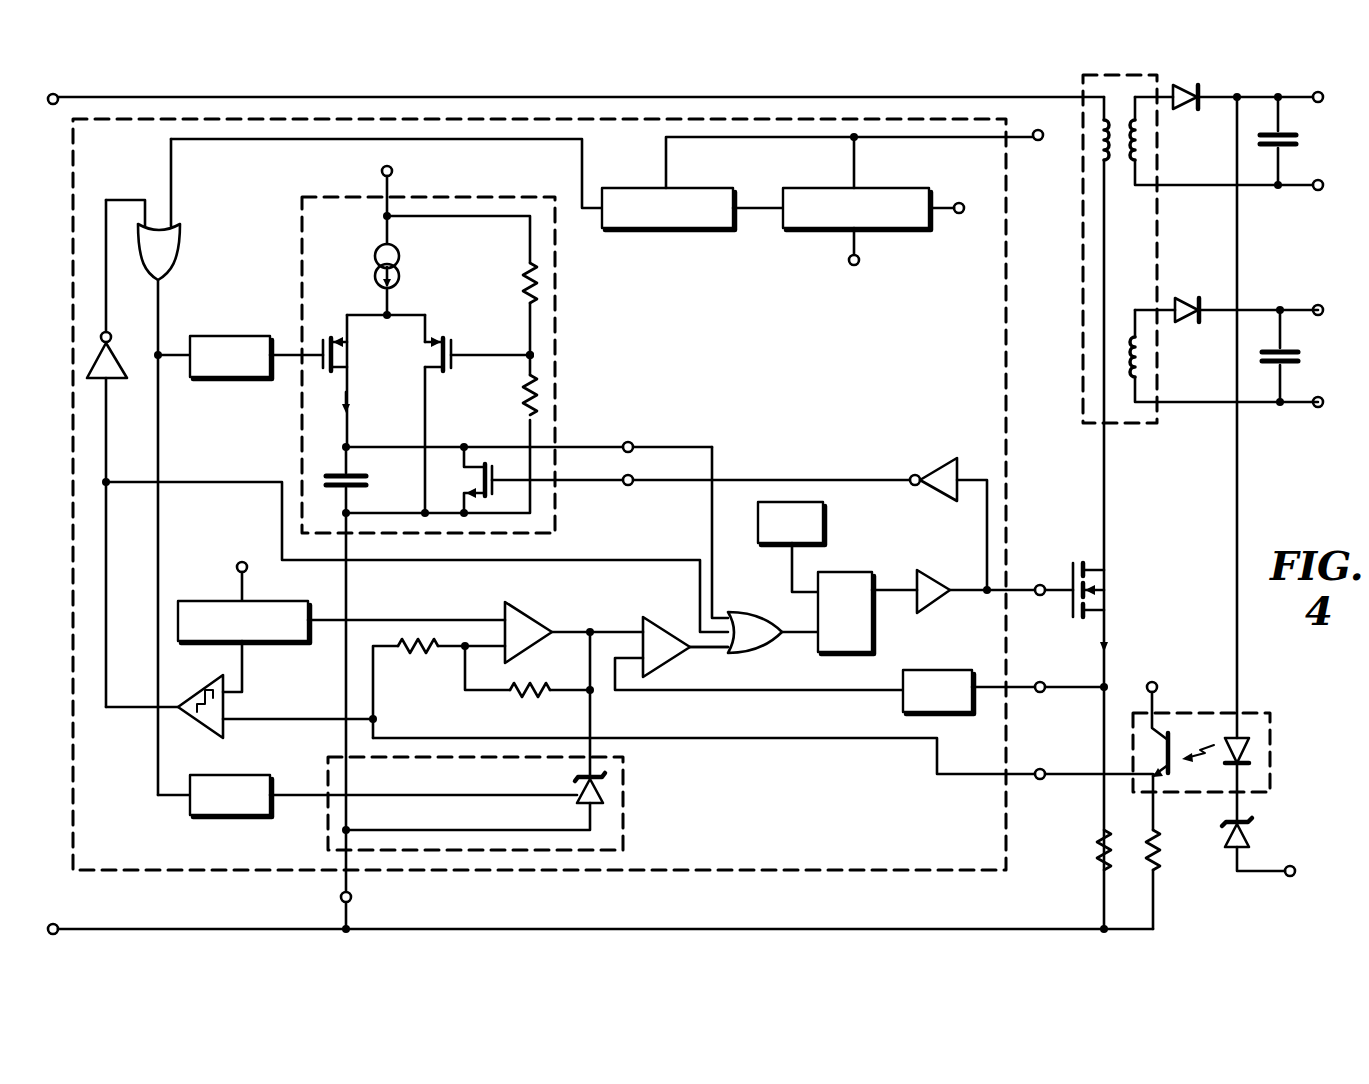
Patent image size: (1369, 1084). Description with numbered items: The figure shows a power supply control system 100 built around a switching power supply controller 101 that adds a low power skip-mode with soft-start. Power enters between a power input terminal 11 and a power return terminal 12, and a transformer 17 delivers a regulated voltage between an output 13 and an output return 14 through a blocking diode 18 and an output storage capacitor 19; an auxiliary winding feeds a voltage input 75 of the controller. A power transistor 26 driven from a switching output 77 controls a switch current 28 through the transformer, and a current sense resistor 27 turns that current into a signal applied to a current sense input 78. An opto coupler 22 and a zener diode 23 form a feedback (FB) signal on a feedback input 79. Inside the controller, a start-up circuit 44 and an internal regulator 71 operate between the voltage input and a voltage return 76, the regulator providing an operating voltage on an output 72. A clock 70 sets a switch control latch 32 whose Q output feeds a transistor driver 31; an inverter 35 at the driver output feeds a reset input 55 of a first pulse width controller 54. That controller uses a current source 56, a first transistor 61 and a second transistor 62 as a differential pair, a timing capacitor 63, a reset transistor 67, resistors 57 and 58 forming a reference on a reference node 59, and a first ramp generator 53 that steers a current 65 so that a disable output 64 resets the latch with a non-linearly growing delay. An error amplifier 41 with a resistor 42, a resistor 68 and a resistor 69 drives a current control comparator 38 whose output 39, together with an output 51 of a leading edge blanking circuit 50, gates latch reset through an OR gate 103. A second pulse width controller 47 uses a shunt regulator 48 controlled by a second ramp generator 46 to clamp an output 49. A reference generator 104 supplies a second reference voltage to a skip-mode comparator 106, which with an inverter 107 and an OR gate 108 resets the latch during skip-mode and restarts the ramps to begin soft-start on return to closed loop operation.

The power input terminal 11 is at (53, 104).
The power return terminal 12 is at (53, 924).
The output 13 is at (1323, 97).
The output return 14 is at (1323, 185).
The transformer 17 is at (1157, 240).
The blocking diode 18 is at (1185, 111).
The output storage capacitor 19 is at (1298, 140).
The opto coupler 22 is at (1270, 744).
The zener diode 23 is at (1225, 855).
The power transistor 26 is at (1112, 582).
The current sense resistor 27 is at (1098, 855).
The switch current 28 is at (1110, 648).
The transistor driver 31 is at (932, 580).
The switch control latch 32 is at (855, 571).
The inverter 35 is at (938, 462).
The current control comparator 38 is at (664, 624).
The output of comparator 39 is at (697, 652).
The error amplifier 41 is at (530, 614).
The resistor 42 is at (1159, 850).
The start-up circuit 44 is at (666, 230).
The second ramp generator 46 is at (232, 817).
The second pulse width controller 47 is at (623, 830).
The shunt regulator 48 is at (606, 790).
The output of second pulse width controller 49 is at (592, 714).
The leading edge blanking circuit 50 is at (948, 670).
The output of LEB 51 is at (745, 692).
The first ramp generator 53 is at (230, 379).
The first pulse width controller 54 is at (302, 244).
The reset input 55 is at (628, 486).
The current source 56 is at (399, 270).
The resistor 57 is at (520, 274).
The resistor 58 is at (520, 421).
The reference node 59 is at (524, 360).
The first transistor 61 is at (449, 338).
The second transistor 62 is at (322, 334).
The timing capacitor 63 is at (368, 483).
The disable output 64 is at (628, 441).
The current 65 is at (350, 410).
The reset transistor 67 is at (457, 464).
The resistor 68 is at (548, 684).
The resistor 69 is at (416, 660).
The clock 70 is at (825, 520).
The internal regulator 71 is at (812, 188).
The output of regulator 72 is at (392, 171).
The voltage input 75 is at (1038, 140).
The voltage return 76 is at (854, 265).
The switching output 77 is at (1040, 584).
The current sense input 78 is at (1040, 681).
The feedback input 79 is at (1040, 779).
The power supply control system 100 is at (1335, 513).
The switching power supply controller 101 is at (1006, 347).
The OR gate 103 is at (770, 650).
The reference generator 104 is at (204, 601).
The skip-mode comparator 106 is at (226, 735).
The inverter 107 is at (112, 380).
The OR gate 108 is at (180, 250).